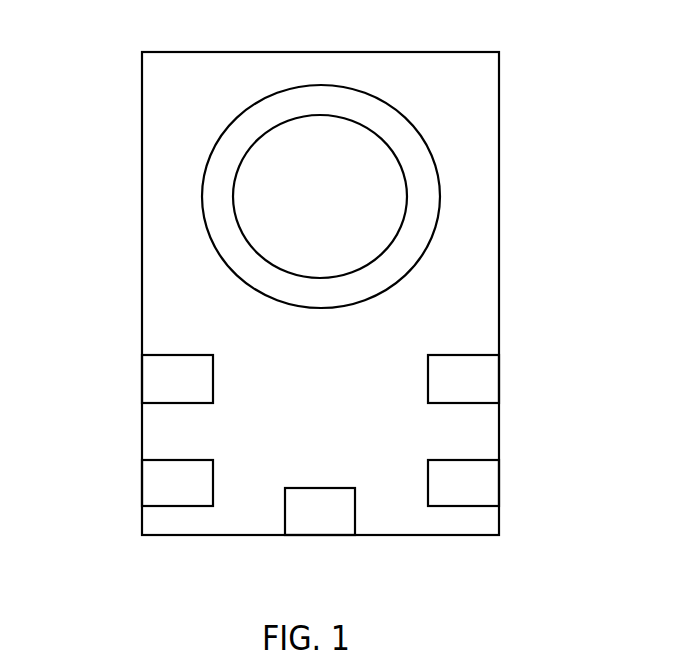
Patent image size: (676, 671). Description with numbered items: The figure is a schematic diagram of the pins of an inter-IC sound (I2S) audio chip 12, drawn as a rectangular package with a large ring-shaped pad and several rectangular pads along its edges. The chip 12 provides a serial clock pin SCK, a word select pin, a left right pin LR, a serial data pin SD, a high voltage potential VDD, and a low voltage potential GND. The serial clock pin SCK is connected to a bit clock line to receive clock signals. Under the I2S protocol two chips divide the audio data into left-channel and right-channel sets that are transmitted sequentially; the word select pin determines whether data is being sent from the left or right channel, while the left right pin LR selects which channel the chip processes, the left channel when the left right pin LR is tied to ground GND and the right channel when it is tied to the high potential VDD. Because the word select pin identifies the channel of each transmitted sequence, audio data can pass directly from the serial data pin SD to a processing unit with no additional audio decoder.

The I2S audio chip 12 is at (135, 38).
The low voltage potential GND is at (294, 196).
The serial clock pin SCK is at (144, 379).
The high voltage potential VDD is at (144, 483).
The left right pin LR is at (490, 379).
The serial data pin SD is at (320, 531).